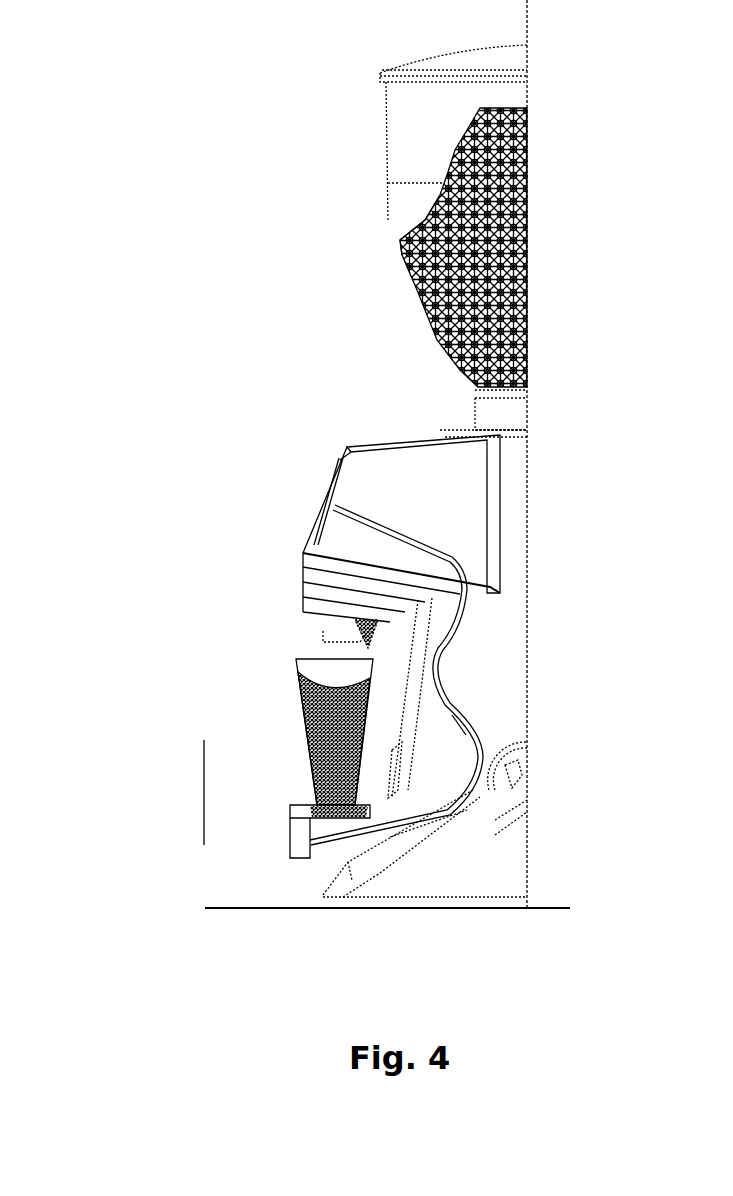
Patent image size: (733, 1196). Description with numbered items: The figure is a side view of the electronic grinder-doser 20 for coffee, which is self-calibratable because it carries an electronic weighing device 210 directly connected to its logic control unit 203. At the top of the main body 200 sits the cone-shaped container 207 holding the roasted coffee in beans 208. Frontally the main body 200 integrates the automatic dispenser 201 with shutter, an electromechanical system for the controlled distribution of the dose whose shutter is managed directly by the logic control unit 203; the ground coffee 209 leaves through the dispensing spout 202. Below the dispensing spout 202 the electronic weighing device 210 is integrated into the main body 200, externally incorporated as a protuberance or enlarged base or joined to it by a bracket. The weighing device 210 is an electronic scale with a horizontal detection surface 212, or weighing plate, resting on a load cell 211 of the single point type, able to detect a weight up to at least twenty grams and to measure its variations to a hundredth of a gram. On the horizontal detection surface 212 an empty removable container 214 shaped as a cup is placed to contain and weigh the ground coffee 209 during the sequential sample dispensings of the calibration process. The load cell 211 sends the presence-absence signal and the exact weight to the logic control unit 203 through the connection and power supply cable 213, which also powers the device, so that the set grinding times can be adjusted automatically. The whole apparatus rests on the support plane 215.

The electronic grinder-doser 20 is at (110, 78).
The main body 200 is at (500, 695).
The automatic dispenser 201 is at (410, 478).
The dispensing spout 202 is at (323, 628).
The logic control unit 203 is at (337, 497).
The cone-shaped container 207 is at (498, 93).
The roasted coffee in beans 208 is at (437, 213).
The ground coffee 209 is at (372, 660).
The electronic weighing device 210 is at (179, 792).
The load cell 211 is at (295, 828).
The horizontal detection surface 212 is at (300, 808).
The connection and power supply cable 213 is at (460, 725).
The removable container 214 is at (298, 676).
The support plane 215 is at (567, 908).